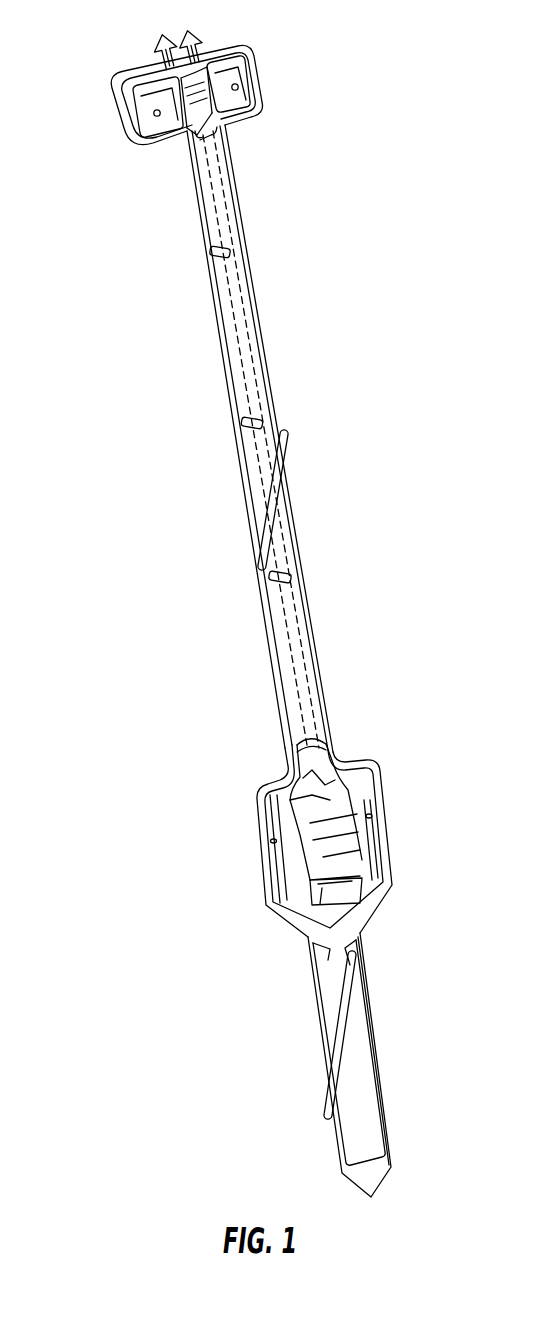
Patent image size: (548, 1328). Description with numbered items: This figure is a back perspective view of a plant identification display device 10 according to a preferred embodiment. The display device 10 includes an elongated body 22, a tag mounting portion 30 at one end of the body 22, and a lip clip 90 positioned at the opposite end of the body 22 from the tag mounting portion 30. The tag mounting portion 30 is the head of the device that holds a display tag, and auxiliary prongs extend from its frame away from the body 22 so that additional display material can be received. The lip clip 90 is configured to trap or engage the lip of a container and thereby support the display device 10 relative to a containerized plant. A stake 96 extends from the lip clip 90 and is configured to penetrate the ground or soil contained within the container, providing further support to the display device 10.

The display device 10 is at (253, 598).
The body 22 is at (240, 460).
The tag mounting portion 30 is at (221, 96).
The lip clip 90 is at (236, 801).
The stake 96 is at (375, 1030).